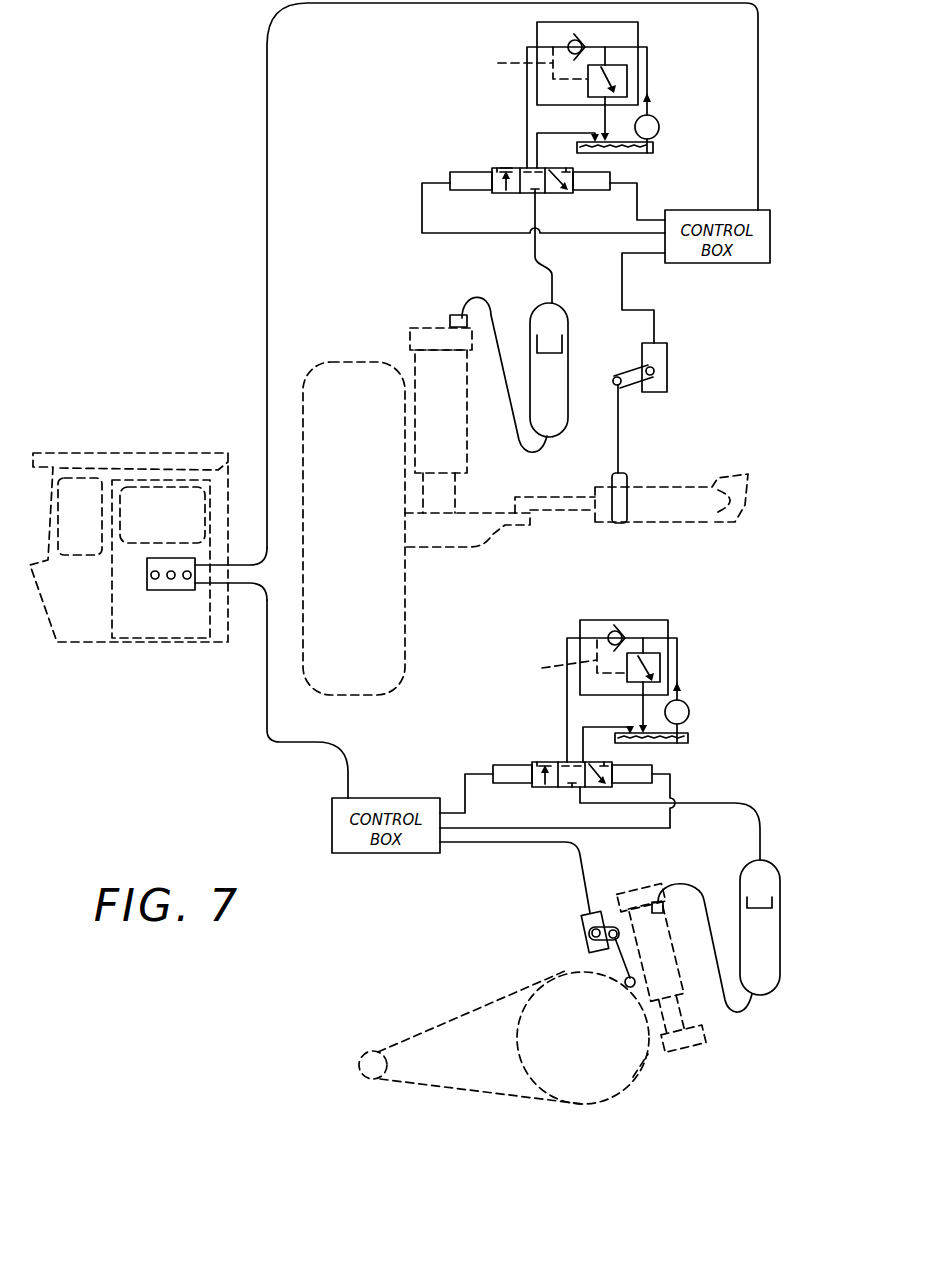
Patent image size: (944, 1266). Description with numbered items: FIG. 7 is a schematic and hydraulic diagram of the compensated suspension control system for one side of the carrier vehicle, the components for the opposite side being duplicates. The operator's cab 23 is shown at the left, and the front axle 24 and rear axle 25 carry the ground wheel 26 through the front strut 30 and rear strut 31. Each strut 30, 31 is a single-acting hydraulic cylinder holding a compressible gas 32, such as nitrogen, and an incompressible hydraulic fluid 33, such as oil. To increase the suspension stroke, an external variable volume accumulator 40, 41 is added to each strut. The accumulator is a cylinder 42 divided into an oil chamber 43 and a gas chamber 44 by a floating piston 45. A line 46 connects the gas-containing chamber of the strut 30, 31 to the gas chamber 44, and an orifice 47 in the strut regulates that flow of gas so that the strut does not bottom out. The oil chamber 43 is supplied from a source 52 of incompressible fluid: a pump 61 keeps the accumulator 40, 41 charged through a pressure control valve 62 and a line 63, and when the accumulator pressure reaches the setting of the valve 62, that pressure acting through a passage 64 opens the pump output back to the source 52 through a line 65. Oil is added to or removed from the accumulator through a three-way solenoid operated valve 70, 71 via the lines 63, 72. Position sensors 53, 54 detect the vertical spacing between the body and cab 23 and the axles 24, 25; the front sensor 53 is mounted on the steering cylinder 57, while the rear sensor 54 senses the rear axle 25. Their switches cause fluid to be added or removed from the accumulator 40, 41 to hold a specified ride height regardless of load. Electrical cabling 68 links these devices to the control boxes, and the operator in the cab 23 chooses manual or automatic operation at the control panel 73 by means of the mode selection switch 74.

The operator's cab 23 is at (110, 450).
The front axle 24 is at (497, 537).
The rear axle 25 is at (577, 1110).
The front ground wheel 26 is at (405, 638).
The front strut 30 is at (405, 323).
The rear strut 31 is at (700, 1025).
The compressible gas 32 is at (410, 337).
The incompressible hydraulic fluid 33 is at (460, 445).
The accumulator 40 is at (575, 378).
The accumulator 41 is at (776, 855).
The accumulator cylinder 42 is at (568, 362).
The oil chamber 43 is at (558, 317).
The gas chamber 44 is at (568, 403).
The floating piston 45 is at (563, 345).
The line 46 is at (520, 457).
The orifice 47 is at (458, 315).
The source of incompressible fluid 52 is at (653, 150).
The front position sensor 53 is at (667, 367).
The rear position sensor 54 is at (583, 925).
The steering cylinder 57 is at (670, 472).
The pump 61 is at (660, 128).
The pressure control valve 62 is at (638, 25).
The line 63 is at (527, 106).
The passage 64 is at (544, 362).
The line 65 is at (595, 133).
The electrical cable 68 is at (267, 289).
The three-way solenoid operated valve 70 is at (492, 170).
The three-way solenoid operated valve 71 is at (532, 762).
The line 72 is at (535, 262).
The control panel 73 is at (177, 590).
The mode selection switch 74 is at (155, 579).